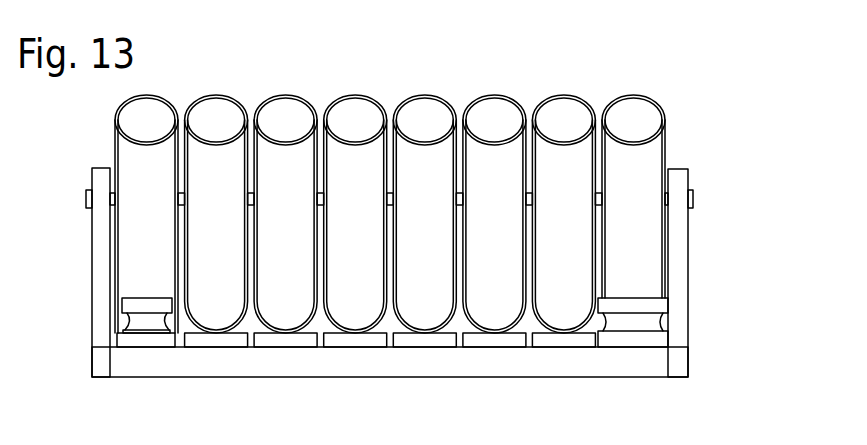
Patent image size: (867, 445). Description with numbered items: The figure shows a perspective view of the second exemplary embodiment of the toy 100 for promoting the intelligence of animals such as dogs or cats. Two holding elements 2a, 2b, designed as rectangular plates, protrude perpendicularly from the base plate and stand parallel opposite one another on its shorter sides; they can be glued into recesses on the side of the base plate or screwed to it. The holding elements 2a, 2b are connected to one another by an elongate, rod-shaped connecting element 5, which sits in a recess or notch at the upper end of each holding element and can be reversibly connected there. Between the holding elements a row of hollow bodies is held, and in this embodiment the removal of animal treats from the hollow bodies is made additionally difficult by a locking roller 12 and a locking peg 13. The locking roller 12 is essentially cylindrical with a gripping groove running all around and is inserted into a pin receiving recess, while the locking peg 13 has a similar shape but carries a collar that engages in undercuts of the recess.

The toy 100 is at (699, 87).
The holding element 2a is at (678, 267).
The holding element 2b is at (100, 180).
The connecting element 5 is at (694, 196).
The locking roller 12 is at (643, 338).
The locking peg 13 is at (148, 340).